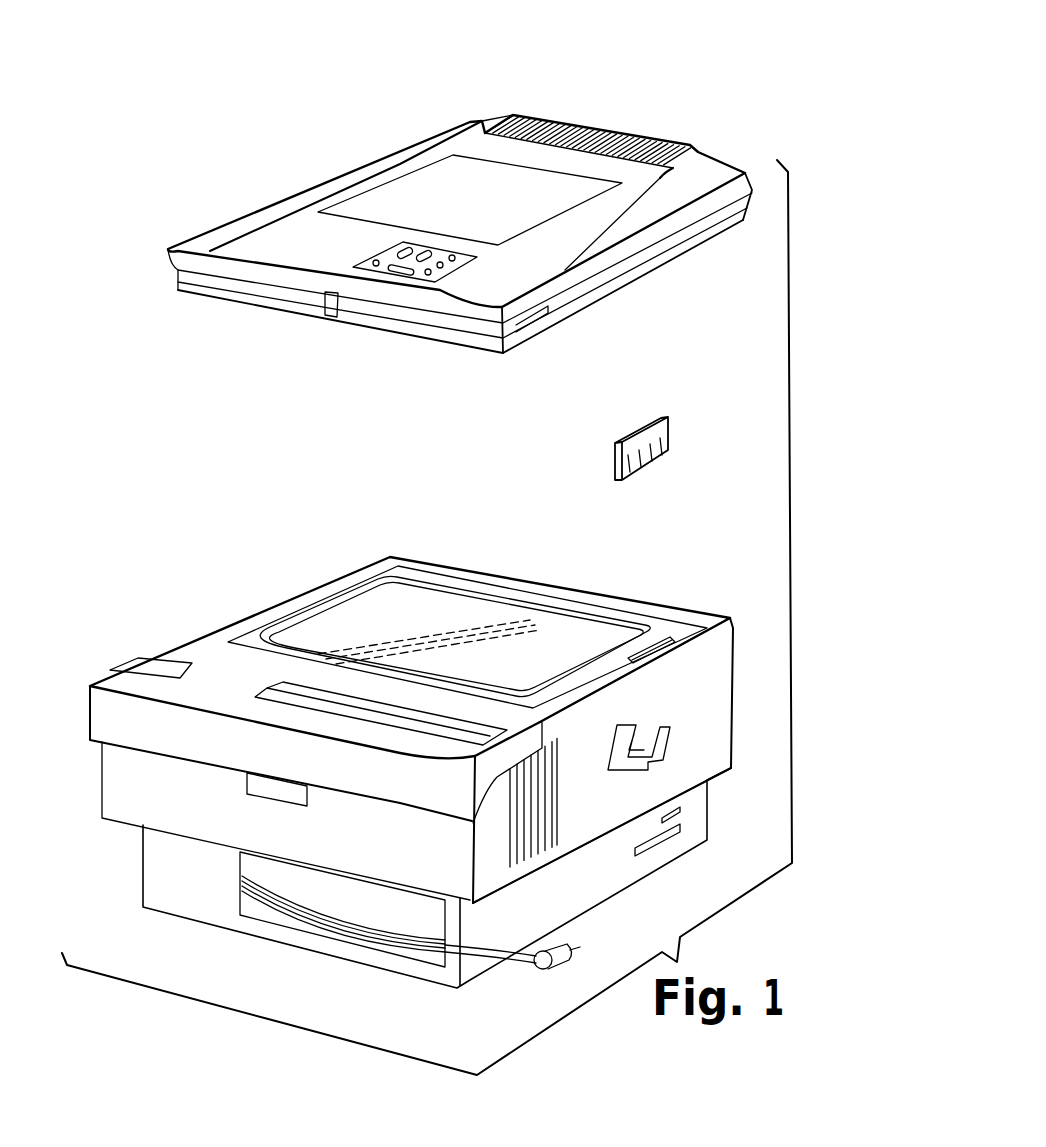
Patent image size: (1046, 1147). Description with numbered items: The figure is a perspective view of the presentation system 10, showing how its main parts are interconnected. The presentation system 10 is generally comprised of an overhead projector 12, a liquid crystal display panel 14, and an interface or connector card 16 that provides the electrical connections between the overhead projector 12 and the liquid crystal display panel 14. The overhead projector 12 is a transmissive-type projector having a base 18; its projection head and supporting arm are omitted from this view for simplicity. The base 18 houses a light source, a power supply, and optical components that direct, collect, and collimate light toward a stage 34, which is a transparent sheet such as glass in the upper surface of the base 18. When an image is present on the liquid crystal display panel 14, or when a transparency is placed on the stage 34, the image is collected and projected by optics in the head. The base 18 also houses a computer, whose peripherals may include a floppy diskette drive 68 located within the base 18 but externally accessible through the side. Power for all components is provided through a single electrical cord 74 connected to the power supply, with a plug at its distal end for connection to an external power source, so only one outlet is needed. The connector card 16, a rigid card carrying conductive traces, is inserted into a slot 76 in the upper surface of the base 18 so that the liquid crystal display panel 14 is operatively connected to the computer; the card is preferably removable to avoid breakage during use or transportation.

The presentation system 10 is at (279, 108).
The overhead projector 12 is at (119, 842).
The liquid crystal display panel 14 is at (650, 117).
The connector card 16 is at (668, 436).
The base 18 is at (710, 695).
The stage 34 is at (495, 607).
The floppy diskette drive 68 is at (650, 845).
The electrical cord 74 is at (557, 970).
The slot 76 is at (657, 643).